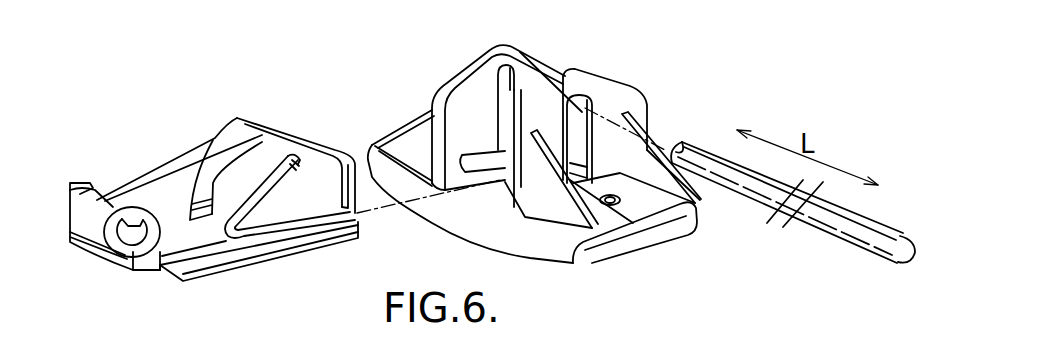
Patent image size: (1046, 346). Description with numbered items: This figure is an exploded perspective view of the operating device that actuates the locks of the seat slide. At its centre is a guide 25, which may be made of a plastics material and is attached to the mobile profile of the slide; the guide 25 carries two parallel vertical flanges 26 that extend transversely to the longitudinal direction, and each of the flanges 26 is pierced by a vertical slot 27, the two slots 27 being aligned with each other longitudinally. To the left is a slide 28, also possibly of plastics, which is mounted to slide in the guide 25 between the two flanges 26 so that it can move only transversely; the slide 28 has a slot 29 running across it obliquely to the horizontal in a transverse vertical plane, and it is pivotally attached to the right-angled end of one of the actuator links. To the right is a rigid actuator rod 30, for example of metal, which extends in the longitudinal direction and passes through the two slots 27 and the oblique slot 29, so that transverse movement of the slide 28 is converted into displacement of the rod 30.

The guide 25 is at (638, 217).
The vertical flanges 26 is at (477, 90).
The vertical slots 27 is at (582, 100).
The slide 28 is at (293, 252).
The slot 29 is at (284, 193).
The rigid actuator rod 30 is at (825, 210).